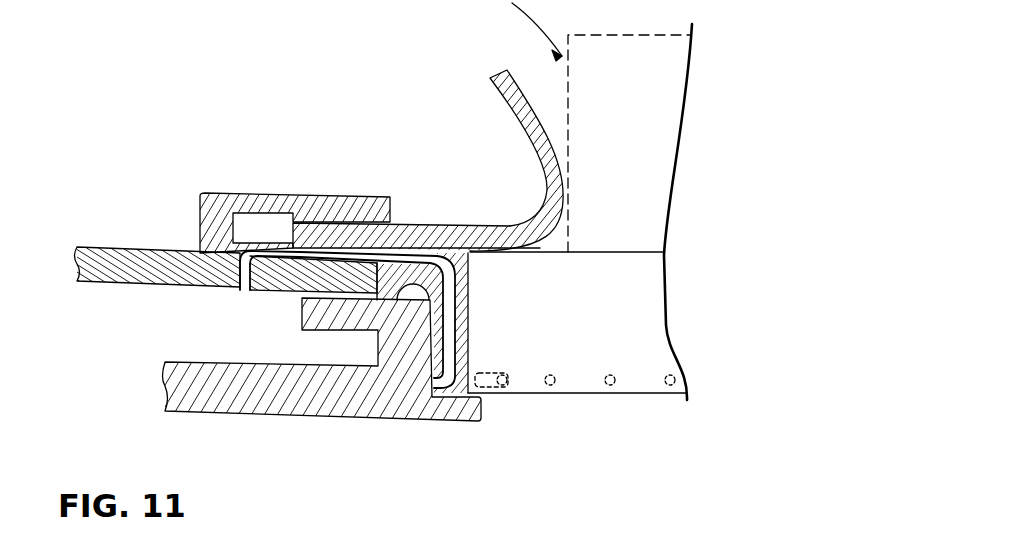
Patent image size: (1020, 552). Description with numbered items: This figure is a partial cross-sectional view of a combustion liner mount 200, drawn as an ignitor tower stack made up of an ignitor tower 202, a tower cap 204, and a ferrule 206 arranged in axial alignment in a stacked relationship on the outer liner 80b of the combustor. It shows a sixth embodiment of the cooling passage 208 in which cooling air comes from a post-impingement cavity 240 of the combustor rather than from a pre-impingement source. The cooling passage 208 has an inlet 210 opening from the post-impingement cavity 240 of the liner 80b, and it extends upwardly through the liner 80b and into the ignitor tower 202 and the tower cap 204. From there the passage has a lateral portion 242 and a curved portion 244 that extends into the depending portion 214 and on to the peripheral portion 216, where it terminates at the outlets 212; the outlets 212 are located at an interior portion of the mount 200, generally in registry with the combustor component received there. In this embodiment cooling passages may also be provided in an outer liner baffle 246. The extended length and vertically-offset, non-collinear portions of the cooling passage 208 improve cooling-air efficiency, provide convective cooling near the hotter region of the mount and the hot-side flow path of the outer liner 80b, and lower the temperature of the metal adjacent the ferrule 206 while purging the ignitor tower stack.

The combustion liner mount 200 is at (192, 140).
The ignitor tower 202 is at (200, 218).
The tower cap 204 is at (251, 212).
The ferrule 206 is at (508, 103).
The cooling passage 208 is at (238, 250).
The inlet 210 is at (245, 293).
The outlet 212 is at (702, 464).
The depending portion 214 is at (452, 310).
The peripheral portion 216 is at (459, 385).
The post-impingement cavity 240 is at (320, 348).
The lateral portion 242 is at (299, 247).
The curved portion 244 is at (445, 262).
The outer liner baffle 246 is at (142, 267).
The outer liner 80b is at (347, 400).